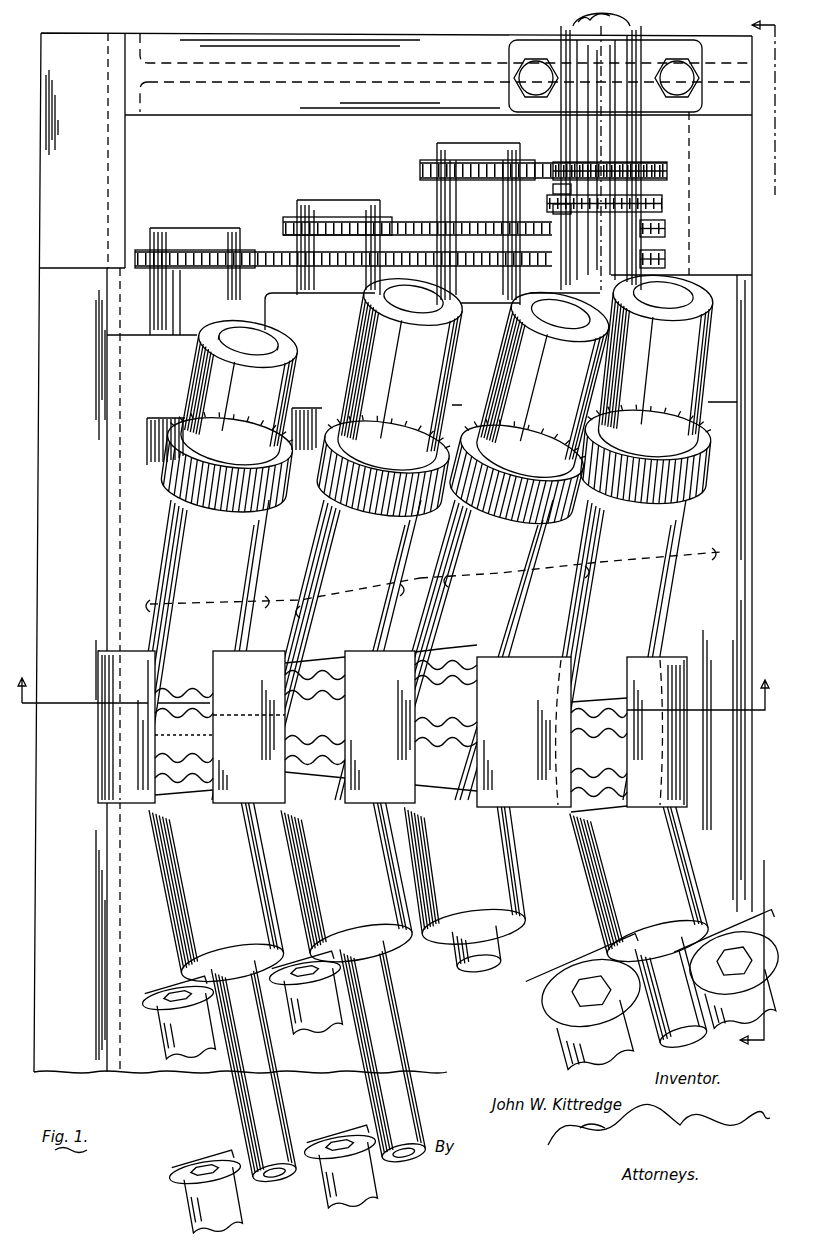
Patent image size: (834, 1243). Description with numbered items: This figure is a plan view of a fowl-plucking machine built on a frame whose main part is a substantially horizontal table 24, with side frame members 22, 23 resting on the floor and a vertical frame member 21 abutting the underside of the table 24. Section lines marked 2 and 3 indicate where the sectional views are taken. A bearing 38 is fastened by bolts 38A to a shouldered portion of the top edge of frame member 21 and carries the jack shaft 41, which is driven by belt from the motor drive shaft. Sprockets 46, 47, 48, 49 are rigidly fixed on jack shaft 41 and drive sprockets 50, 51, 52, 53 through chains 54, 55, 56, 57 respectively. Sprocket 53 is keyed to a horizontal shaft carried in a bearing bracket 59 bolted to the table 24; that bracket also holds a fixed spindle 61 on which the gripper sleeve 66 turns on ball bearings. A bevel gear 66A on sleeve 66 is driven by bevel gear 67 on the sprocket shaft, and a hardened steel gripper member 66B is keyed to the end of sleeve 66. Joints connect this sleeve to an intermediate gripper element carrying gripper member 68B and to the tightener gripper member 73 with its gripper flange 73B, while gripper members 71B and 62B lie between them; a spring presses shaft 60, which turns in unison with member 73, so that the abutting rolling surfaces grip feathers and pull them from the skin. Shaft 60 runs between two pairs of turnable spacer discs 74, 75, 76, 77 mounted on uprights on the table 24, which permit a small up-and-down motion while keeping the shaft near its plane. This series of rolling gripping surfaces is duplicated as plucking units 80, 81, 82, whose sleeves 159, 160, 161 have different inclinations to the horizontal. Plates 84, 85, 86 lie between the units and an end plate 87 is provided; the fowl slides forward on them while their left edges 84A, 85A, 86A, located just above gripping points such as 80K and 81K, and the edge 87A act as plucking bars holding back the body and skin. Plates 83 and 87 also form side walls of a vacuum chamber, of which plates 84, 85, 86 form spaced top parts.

The vertical frame member 21 is at (265, 108).
The frame member 22 is at (83, 169).
The frame member 23 is at (735, 163).
The table 24 is at (150, 956).
The bearing 38 is at (566, 30).
The bolts 38A is at (532, 68).
The jack shaft 41 is at (634, 18).
The sprocket 46 is at (668, 170).
The sprocket 47 is at (666, 201).
The sprocket 48 is at (668, 227).
The sprocket 49 is at (668, 258).
The sprocket 50 is at (483, 166).
The sprocket 51 is at (558, 194).
The sprocket 52 is at (358, 218).
The sprocket 53 is at (205, 250).
The chain 54 is at (418, 180).
The chain 55 is at (556, 212).
The chain 56 is at (430, 232).
The chain 57 is at (292, 258).
The bearing bracket 59 is at (198, 378).
The shaft 60 is at (233, 1090).
The spindle 61 is at (274, 340).
The sleeve 66 is at (163, 573).
The bevel gear 66A is at (173, 481).
The gripper member 66B is at (168, 690).
The bevel gear 67 is at (156, 455).
The gripper member 68B is at (190, 748).
The gripper member 71B is at (208, 705).
The gripper member 62B is at (212, 764).
The tightener gripper member 73 is at (219, 896).
The gripper flange 73B is at (160, 796).
The spacer disc 74 is at (158, 1012).
The spacer disc 75 is at (298, 1000).
The spacer disc 76 is at (176, 1176).
The spacer disc 77 is at (322, 1165).
The plucking unit 80 is at (308, 548).
The gripping point 80K is at (344, 712).
The plucking unit 81 is at (450, 548).
The gripping point 81K is at (472, 702).
The plucking unit 82 is at (531, 584).
The plate 83 is at (143, 686).
The plate 84 is at (255, 686).
The left edge 84A is at (212, 714).
The plate 85 is at (385, 686).
The left edge 85A is at (345, 742).
The plate 86 is at (523, 686).
The left edge 86A is at (477, 740).
The end plate 87 is at (653, 686).
The edge 87A is at (645, 790).
The sleeve 159 is at (294, 594).
The sleeve 160 is at (522, 620).
The sleeve 161 is at (672, 611).
The section line 2- 2 is at (765, 542).
The section line 3- 3 is at (392, 698).